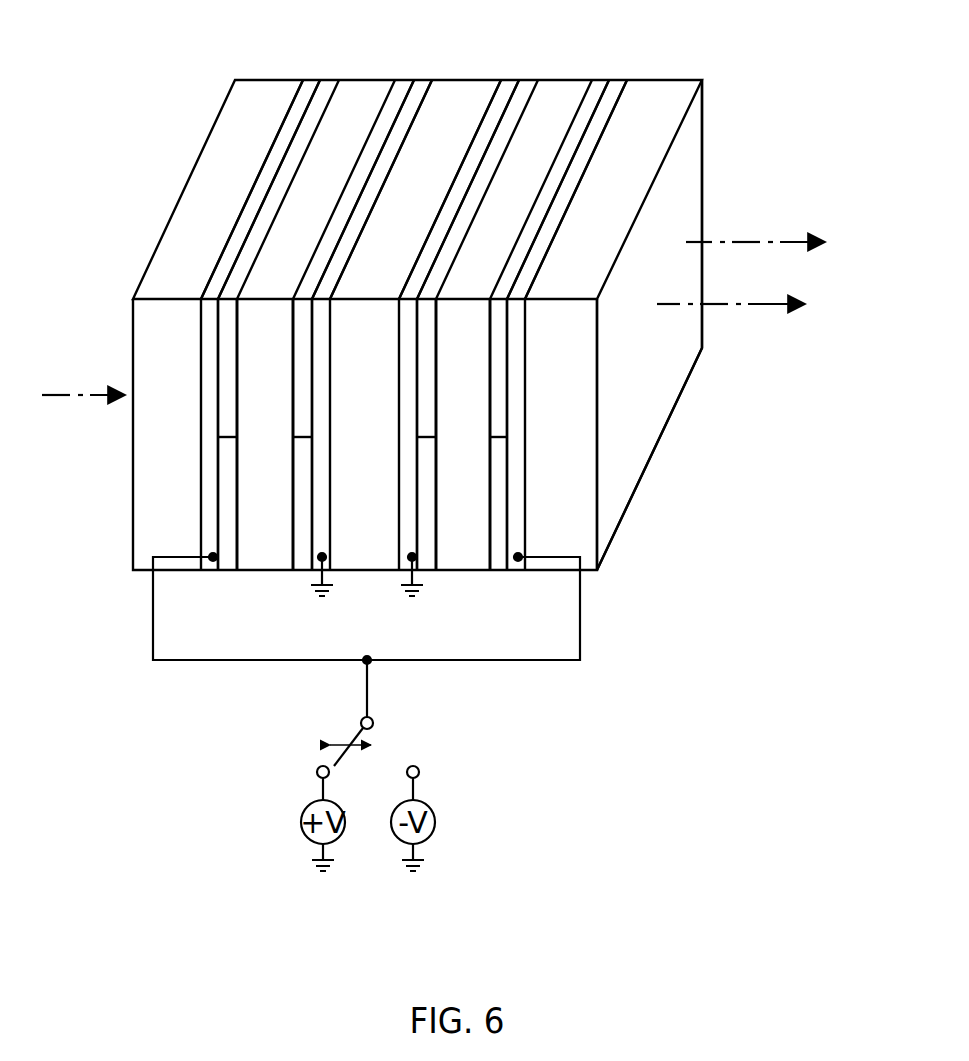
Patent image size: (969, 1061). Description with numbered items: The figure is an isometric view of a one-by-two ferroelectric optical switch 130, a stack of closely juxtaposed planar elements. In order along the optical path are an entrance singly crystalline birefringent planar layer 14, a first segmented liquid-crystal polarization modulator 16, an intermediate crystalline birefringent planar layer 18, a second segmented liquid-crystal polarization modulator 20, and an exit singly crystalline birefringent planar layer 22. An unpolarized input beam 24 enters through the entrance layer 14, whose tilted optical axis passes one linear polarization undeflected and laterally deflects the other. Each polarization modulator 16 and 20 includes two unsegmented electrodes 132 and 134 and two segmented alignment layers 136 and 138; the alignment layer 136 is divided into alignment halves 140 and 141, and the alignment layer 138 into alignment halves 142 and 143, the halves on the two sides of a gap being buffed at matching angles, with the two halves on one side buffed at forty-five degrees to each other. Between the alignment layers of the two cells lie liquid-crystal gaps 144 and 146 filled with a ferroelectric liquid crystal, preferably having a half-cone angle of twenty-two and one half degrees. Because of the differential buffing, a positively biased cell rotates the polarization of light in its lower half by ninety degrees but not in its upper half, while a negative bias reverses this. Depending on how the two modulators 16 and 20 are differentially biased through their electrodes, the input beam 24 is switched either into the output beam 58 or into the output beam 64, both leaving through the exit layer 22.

The entrance singly crystalline birefringent planar layer 14 is at (258, 90).
The first segmented liquid-crystal polarization modulator 16 is at (308, 75).
The intermediate crystalline birefringent planar layer 18 is at (452, 88).
The second segmented liquid-crystal polarization modulator 20 is at (505, 75).
The exit singly crystalline birefringent planar layer 22 is at (650, 85).
The input beam 24 is at (93, 396).
The output beam 58 is at (773, 305).
The output beam 64 is at (775, 241).
The 1×2 ferroelectric optical switch 130 is at (693, 507).
The unsegmented electrode 132 is at (273, 169).
The unsegmented electrode 134 is at (343, 260).
The segmented alignment layer 136 is at (470, 169).
The segmented alignment layer 138 is at (303, 578).
The alignment half 140 is at (231, 353).
The alignment half 141 is at (231, 515).
The alignment half 142 is at (300, 352).
The alignment half 143 is at (300, 510).
The liquid-crystal gap 144 is at (246, 450).
The liquid-crystal gap 146 is at (442, 450).